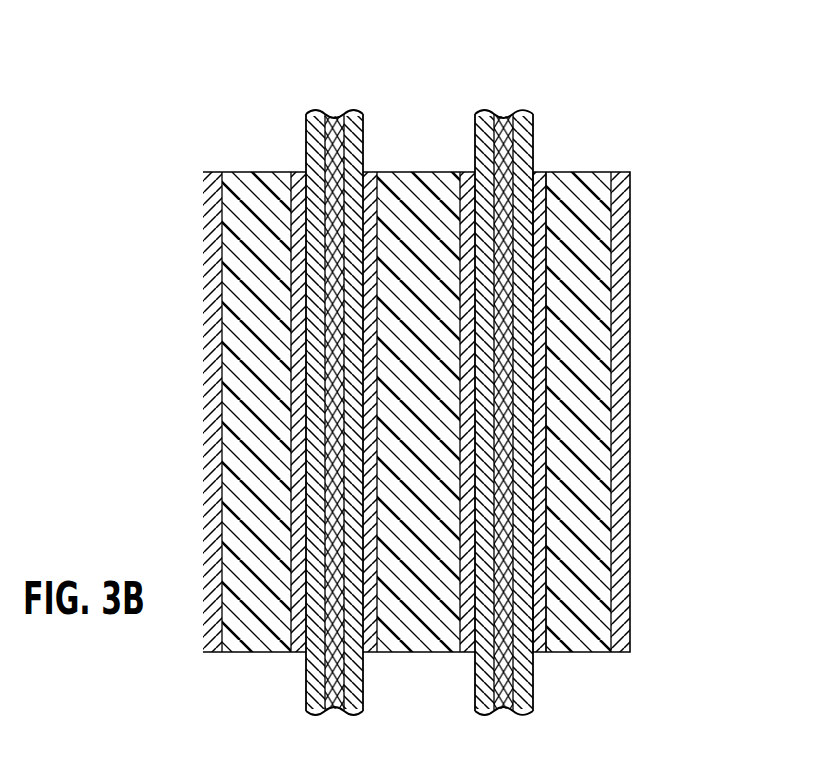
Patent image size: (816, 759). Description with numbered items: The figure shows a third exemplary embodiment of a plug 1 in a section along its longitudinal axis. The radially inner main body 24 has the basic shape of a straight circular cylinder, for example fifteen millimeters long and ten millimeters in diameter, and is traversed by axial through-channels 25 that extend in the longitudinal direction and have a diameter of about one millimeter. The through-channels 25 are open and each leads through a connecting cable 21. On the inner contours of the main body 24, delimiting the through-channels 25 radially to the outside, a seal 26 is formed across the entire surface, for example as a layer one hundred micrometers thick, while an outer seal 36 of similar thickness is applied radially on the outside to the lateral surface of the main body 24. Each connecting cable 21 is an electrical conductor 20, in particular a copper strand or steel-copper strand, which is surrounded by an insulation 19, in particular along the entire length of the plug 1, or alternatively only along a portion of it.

The plug 1 is at (607, 100).
The insulation 19 is at (543, 460).
The electrical conductor 20 is at (532, 553).
The connecting cable 21 is at (540, 505).
The main body 24 is at (583, 353).
The axial through-channels 25 is at (526, 287).
The seal 26 is at (540, 421).
The outer seal 36 is at (621, 262).